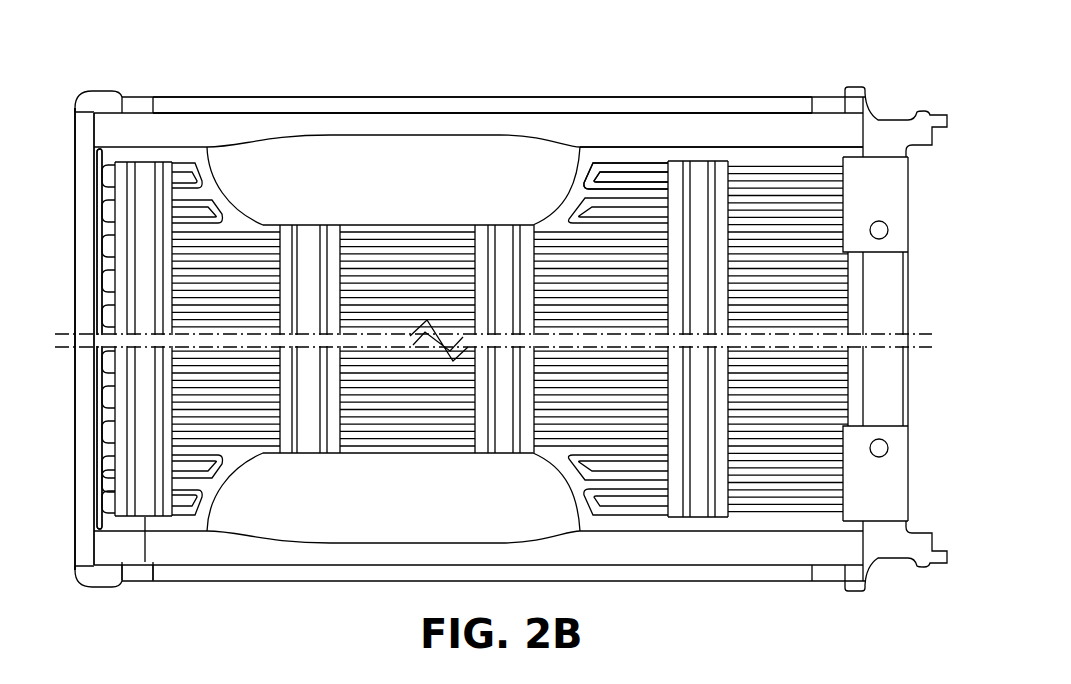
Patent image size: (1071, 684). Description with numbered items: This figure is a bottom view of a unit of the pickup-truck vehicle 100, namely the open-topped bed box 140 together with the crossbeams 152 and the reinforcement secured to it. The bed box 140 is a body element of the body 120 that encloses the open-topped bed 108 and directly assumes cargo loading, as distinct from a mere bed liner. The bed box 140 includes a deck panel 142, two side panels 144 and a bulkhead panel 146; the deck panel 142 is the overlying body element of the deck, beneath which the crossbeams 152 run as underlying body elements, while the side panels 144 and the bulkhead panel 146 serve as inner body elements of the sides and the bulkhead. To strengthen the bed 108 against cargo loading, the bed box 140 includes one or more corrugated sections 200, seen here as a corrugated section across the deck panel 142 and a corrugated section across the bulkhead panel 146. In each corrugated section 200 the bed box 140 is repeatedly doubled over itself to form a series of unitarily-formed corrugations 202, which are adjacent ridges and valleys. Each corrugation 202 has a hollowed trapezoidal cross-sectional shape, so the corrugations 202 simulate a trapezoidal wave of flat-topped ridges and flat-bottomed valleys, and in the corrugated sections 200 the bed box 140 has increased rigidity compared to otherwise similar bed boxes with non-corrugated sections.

The vehicle 100 is at (98, 84).
The bed 108 is at (182, 92).
The body 120 is at (258, 92).
The bed box 140 is at (342, 96).
The deck panel 142 is at (608, 146).
The side panels 144 is at (405, 96).
The bulkhead panel 146 is at (73, 392).
The crossbeams 152 is at (146, 562).
The corrugated sections 200 is at (630, 165).
The corrugations 202 is at (653, 173).